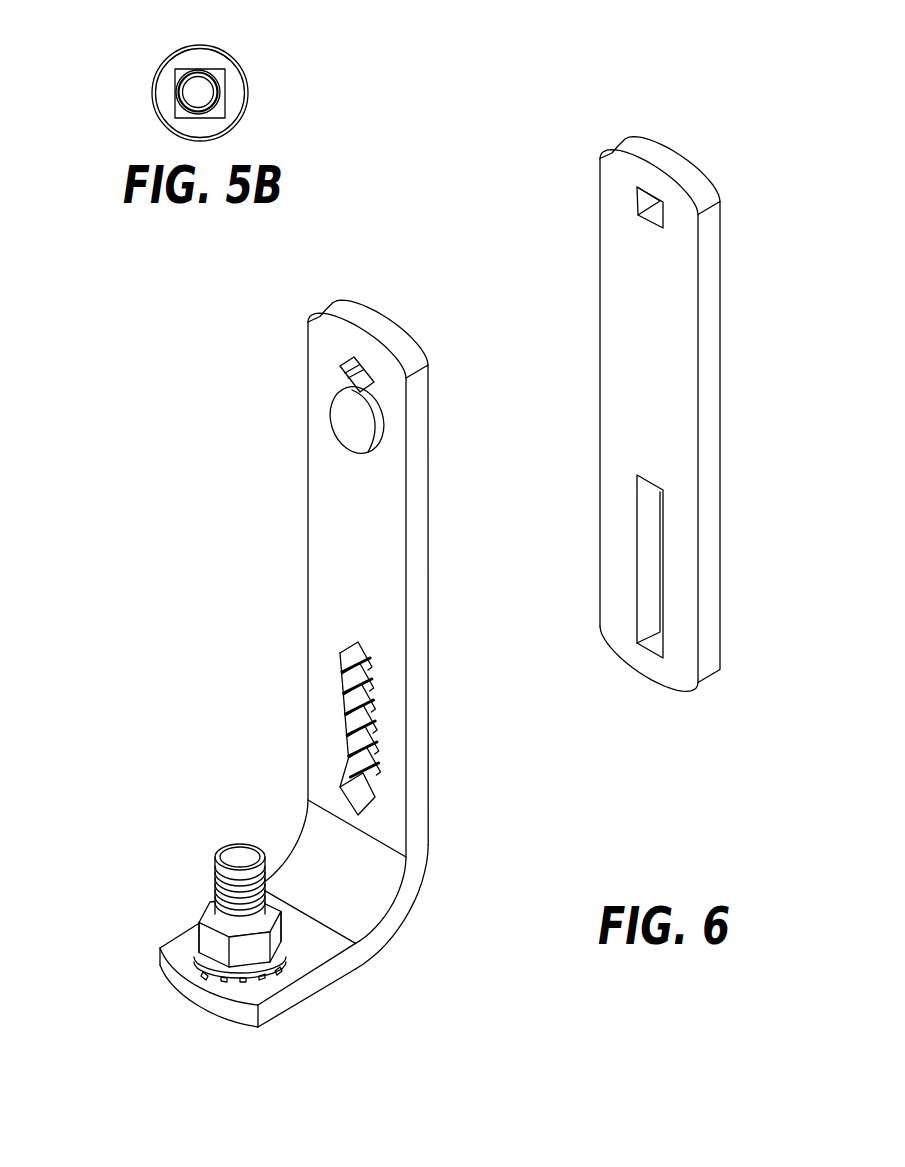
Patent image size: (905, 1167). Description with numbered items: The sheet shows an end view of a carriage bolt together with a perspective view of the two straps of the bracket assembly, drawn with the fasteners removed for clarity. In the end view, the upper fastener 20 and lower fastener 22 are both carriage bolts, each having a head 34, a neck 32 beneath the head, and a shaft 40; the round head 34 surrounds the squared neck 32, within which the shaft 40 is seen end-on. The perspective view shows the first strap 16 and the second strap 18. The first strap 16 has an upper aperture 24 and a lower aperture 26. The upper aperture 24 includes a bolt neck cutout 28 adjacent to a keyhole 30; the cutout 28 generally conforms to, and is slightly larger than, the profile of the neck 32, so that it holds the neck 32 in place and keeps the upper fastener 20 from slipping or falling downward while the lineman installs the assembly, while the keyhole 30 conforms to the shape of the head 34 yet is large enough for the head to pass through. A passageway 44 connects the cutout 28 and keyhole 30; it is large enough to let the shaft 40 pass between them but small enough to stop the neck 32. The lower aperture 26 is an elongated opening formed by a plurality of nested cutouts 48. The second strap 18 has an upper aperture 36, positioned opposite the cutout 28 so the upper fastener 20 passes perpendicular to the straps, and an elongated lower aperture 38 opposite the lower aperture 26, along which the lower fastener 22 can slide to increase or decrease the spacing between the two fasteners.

In FIG. 6, the first strap 16 is at (329, 663).
In FIG. 6, the second strap 18 is at (666, 414).
In FIG. 5B, the upper fastener 20 is at (175, 81).
In FIG. 5B, the lower fastener 22 is at (224, 81).
In FIG. 6, the upper aperture 24 is at (361, 402).
In FIG. 6, the lower aperture 26 is at (318, 710).
In FIG. 6, the bolt neck cutout 28 is at (351, 367).
In FIG. 6, the keyhole 30 is at (347, 415).
In FIG. 5B, the neck 32 is at (226, 72).
In FIG. 5B, the head 34 is at (228, 54).
In FIG. 6, the upper aperture 36 is at (628, 203).
In FIG. 6, the lower aperture 38 is at (628, 555).
In FIG. 5B, the shaft 40 is at (198, 88).
In FIG. 6, the passageway 44 is at (367, 387).
In FIG. 6, the nested cutouts 48 is at (352, 655).